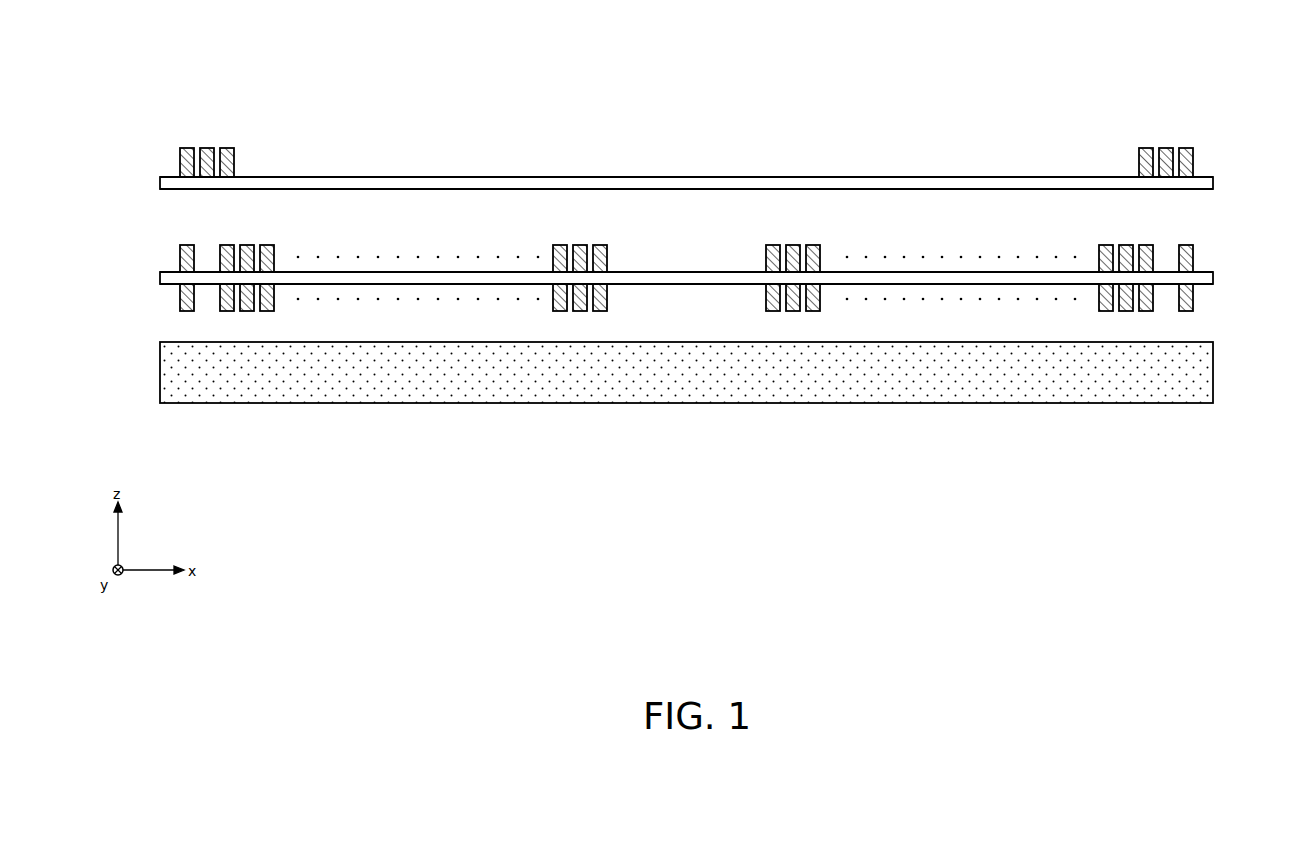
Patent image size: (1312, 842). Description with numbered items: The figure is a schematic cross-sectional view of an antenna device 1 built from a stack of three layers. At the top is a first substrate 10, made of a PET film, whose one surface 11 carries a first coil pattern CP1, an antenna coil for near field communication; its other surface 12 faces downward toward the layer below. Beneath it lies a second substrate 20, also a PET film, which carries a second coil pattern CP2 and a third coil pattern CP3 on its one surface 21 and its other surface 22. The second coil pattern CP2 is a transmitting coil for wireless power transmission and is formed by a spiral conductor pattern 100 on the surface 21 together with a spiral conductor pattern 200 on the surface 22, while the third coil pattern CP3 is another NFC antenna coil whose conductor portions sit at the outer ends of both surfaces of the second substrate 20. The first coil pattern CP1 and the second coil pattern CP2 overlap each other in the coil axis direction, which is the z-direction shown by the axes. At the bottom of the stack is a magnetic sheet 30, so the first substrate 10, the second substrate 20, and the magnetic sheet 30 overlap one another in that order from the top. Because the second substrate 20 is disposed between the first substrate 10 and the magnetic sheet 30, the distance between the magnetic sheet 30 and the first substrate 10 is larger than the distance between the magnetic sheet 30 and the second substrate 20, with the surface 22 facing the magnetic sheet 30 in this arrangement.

The antenna device 1 is at (1078, 12).
The first substrate 10 is at (727, 185).
The one surface of the first substrate 11 is at (658, 177).
The other surface of the first substrate 12 is at (658, 189).
The second substrate 20 is at (727, 279).
The one surface of the second substrate 21 is at (700, 272).
The other surface of the second substrate 22 is at (700, 284).
The magnetic sheet 30 is at (1213, 372).
The spiral conductor pattern 100 is at (958, 240).
The spiral conductor pattern 200 is at (896, 308).
The first coil pattern CP1 is at (206, 134).
The second coil pattern CP2 is at (961, 363).
The third coil pattern CP3 is at (178, 256).